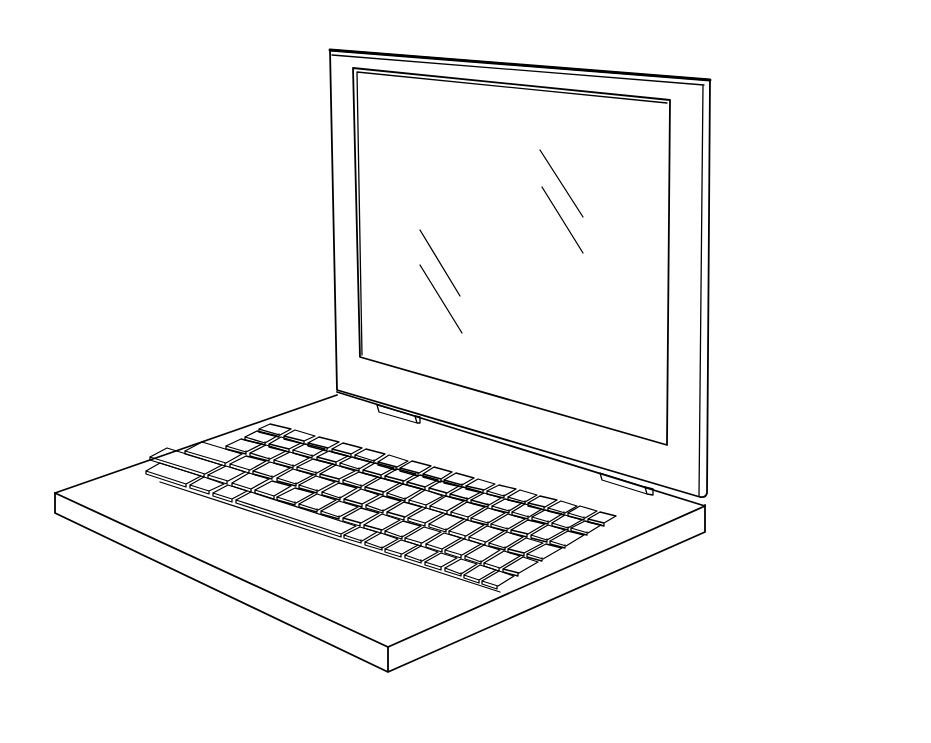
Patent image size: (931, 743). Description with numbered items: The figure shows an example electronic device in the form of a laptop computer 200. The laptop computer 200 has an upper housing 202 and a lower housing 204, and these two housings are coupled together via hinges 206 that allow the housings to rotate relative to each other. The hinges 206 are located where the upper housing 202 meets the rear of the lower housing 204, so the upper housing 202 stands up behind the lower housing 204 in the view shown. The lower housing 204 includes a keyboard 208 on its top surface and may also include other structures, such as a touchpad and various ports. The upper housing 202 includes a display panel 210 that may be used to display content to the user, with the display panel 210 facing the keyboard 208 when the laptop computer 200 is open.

The laptop computer 200 is at (487, 60).
The upper housing 202 is at (690, 210).
The lower housing 204 is at (580, 573).
The hinges 206 is at (633, 485).
The keyboard 208 is at (495, 572).
The display panel 210 is at (388, 211).